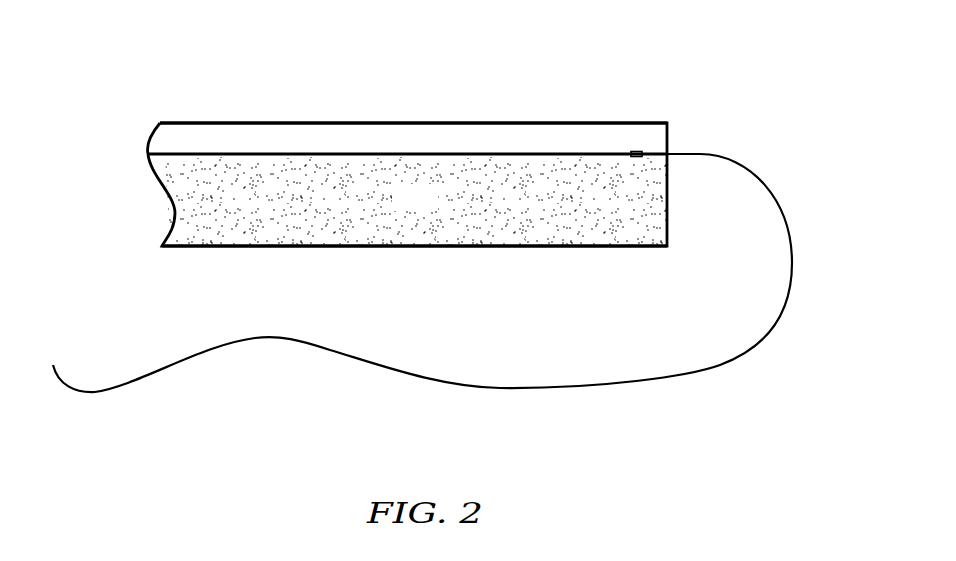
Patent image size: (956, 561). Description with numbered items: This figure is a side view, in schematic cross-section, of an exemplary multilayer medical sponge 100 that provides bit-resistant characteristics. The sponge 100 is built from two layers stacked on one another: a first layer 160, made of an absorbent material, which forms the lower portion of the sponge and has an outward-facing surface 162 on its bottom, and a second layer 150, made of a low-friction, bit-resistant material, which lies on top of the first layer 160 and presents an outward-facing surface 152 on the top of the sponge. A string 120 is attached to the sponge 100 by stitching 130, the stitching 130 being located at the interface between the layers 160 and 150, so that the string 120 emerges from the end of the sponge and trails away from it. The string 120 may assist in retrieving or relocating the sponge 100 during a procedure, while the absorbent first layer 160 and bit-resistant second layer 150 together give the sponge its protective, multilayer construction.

The multilayer medical sponge 100 is at (483, 69).
The string 120 is at (515, 388).
The stitching 130 is at (636, 150).
The second layer 150 is at (394, 133).
The outward-facing surface 152 is at (252, 122).
The first layer 160 is at (433, 208).
The outward-facing surface 162 is at (255, 246).